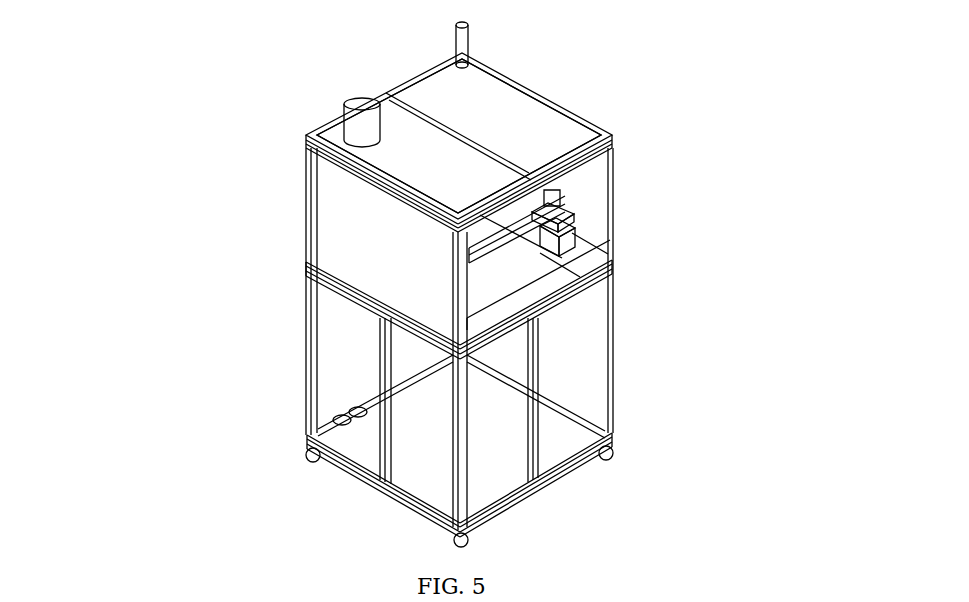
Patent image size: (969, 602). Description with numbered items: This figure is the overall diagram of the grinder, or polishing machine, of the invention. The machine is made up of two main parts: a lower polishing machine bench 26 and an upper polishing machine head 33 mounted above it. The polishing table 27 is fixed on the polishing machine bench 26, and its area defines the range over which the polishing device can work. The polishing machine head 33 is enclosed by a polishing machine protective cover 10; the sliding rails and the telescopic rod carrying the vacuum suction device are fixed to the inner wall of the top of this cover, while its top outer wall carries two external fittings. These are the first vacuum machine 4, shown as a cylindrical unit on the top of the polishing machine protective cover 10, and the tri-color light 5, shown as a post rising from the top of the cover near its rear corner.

The polishing machine head 33 is at (448, 221).
The polishing machine protective cover 10 is at (522, 125).
The first vacuum machine 4 is at (362, 104).
The tri-color light 5 is at (468, 25).
The polishing machine bench 26 is at (583, 259).
The polishing table 27 is at (487, 315).